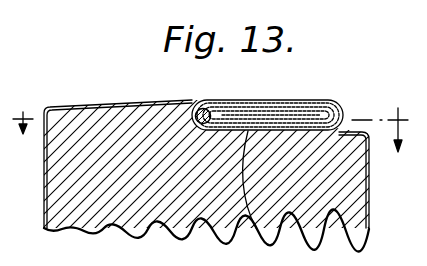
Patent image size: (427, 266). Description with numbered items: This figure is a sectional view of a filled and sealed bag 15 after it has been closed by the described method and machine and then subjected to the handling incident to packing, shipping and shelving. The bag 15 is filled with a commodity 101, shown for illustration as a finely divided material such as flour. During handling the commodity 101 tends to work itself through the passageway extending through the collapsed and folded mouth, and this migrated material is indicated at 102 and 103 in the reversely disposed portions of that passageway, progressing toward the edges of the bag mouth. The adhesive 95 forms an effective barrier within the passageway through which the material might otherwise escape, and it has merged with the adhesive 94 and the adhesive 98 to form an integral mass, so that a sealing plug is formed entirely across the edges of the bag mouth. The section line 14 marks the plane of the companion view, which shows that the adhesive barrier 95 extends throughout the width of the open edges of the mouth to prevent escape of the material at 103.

The section line 14- 14 is at (217, 119).
The bag 15 is at (369, 198).
The adhesive 94 is at (209, 110).
The adhesive 95 is at (235, 110).
The adhesive 98 is at (256, 228).
The commodity 101 is at (93, 231).
The material in passageway 102 is at (323, 89).
The material in passageway 103 is at (297, 104).